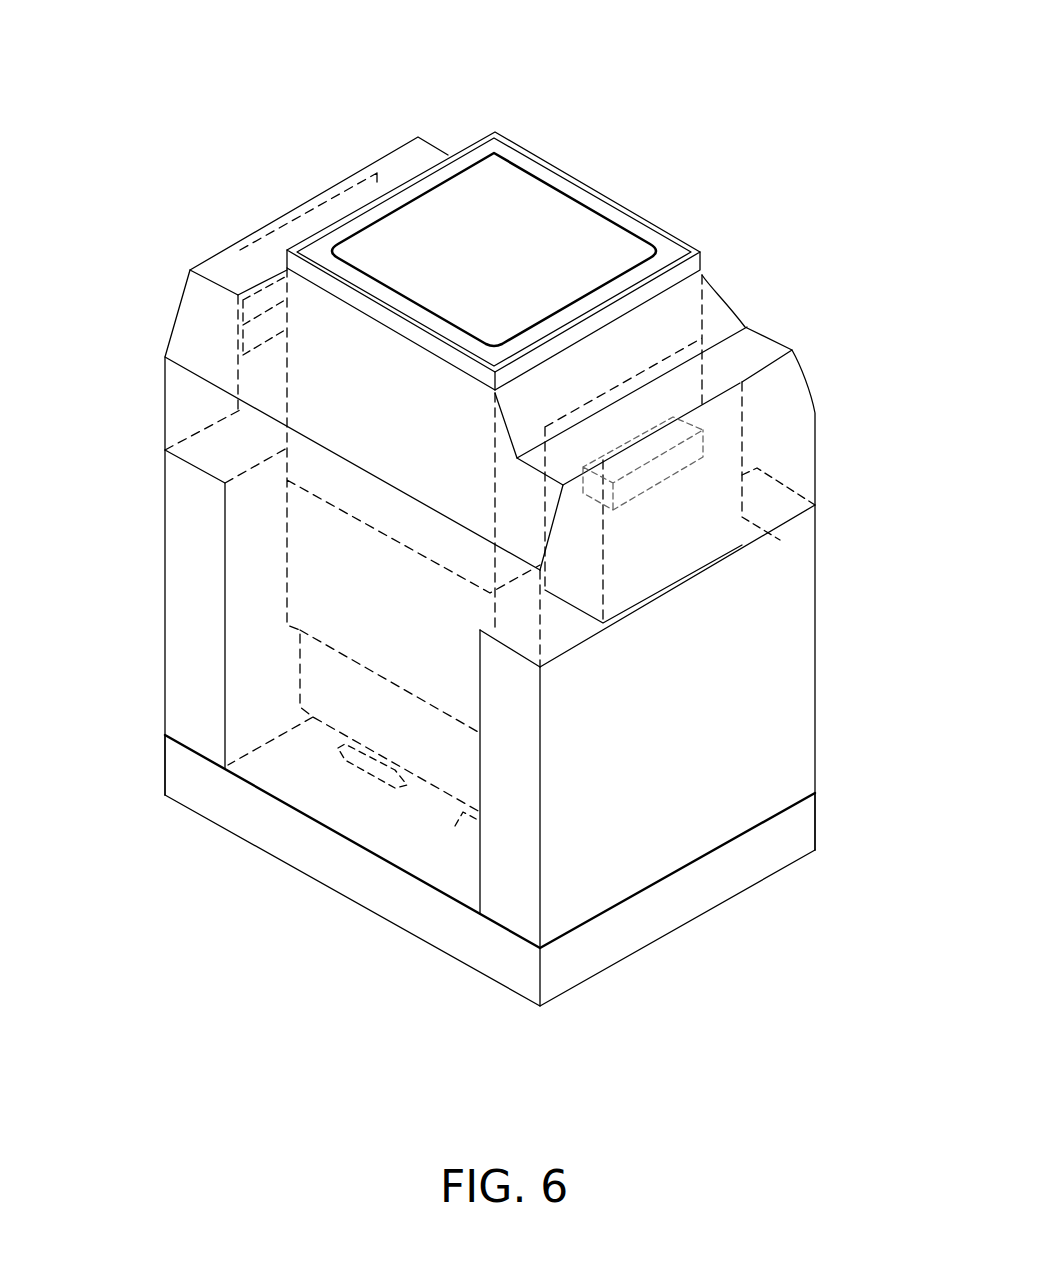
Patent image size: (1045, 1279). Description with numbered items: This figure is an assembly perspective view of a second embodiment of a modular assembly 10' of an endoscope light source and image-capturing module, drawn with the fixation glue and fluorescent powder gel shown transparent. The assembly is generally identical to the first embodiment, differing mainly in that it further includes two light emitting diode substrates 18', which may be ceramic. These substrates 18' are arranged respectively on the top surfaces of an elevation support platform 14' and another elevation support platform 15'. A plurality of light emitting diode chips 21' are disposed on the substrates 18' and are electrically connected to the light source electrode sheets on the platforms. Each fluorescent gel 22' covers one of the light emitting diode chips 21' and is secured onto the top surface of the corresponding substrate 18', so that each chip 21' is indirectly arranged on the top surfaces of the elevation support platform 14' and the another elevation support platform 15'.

The modular assembly of an endoscope light source and image-capturing module 10' is at (492, 511).
The elevation support platform 14' is at (436, 560).
The another elevation support platform 15' is at (540, 845).
The light emitting diode substrate 18' is at (491, 474).
The light emitting diode chip 21' is at (508, 408).
The fluorescent gel 22' is at (541, 327).